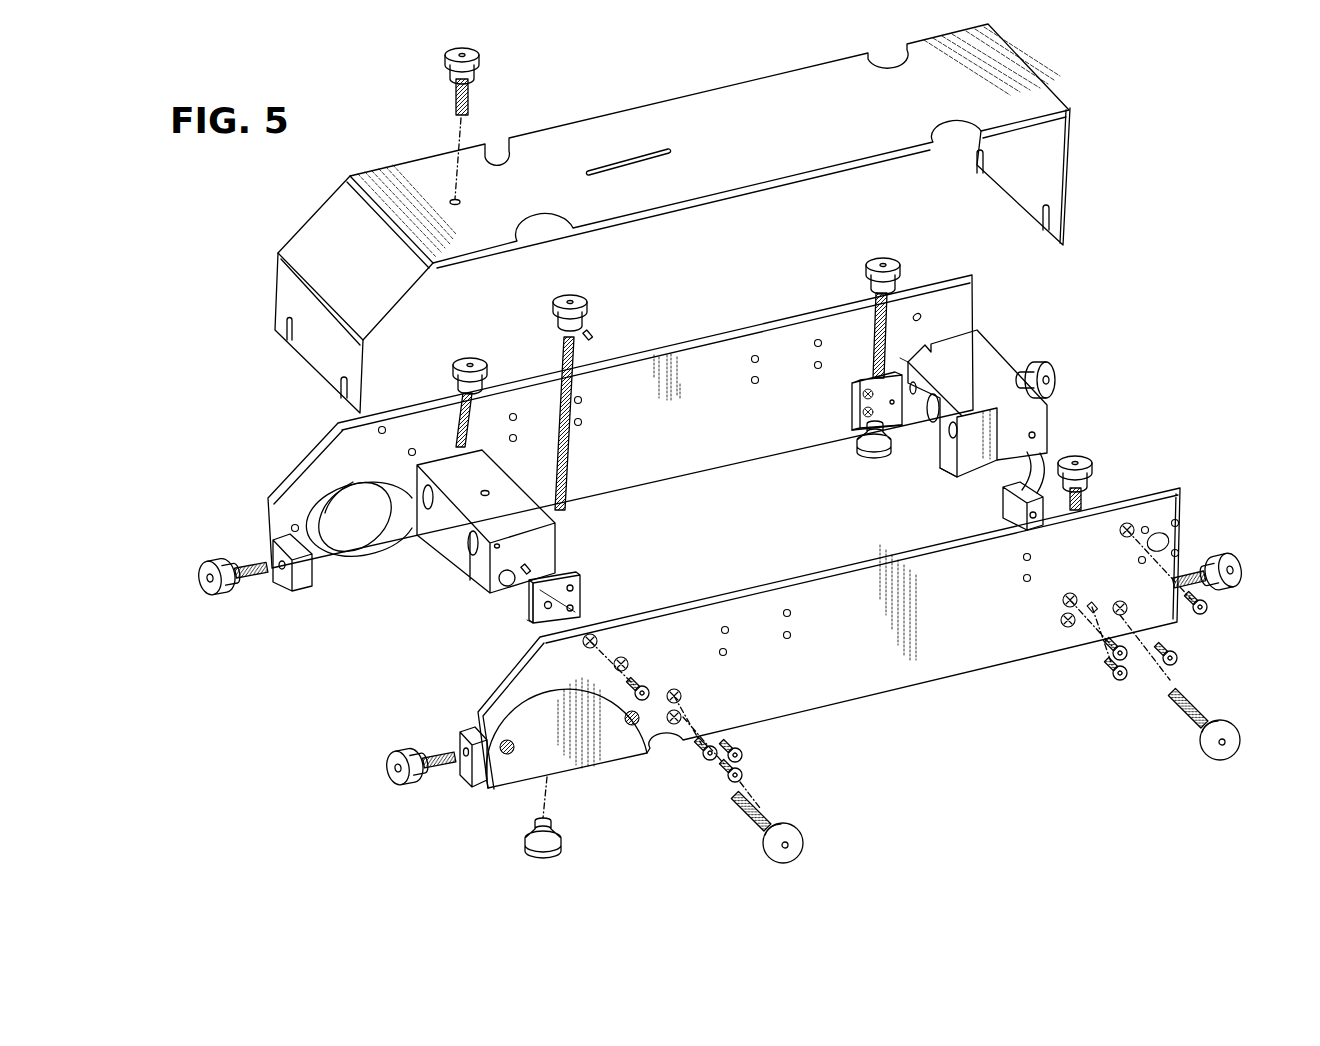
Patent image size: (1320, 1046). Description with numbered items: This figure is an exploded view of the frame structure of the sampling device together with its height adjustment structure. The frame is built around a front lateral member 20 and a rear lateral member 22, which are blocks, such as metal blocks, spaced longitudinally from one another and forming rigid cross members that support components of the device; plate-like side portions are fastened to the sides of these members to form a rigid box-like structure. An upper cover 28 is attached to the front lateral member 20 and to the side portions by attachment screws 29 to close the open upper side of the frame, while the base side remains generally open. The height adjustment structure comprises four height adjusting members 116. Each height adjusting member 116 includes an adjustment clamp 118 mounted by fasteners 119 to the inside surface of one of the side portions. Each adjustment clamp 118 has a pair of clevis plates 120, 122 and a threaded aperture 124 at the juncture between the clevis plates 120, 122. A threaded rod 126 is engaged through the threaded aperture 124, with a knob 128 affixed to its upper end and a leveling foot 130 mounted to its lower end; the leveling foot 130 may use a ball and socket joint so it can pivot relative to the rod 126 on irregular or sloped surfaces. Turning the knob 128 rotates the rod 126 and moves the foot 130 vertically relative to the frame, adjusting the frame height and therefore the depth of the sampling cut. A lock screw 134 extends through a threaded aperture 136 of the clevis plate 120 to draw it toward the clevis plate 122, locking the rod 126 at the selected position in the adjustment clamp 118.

The front lateral member 20 is at (458, 526).
The rear lateral member 22 is at (992, 360).
The upper cover 28 is at (662, 113).
The attachment screws 29 is at (452, 52).
The height adjusting members 116 is at (452, 420).
The adjustment clamp 118 is at (585, 598).
The fasteners 119 is at (745, 775).
The clevis plate 120 is at (528, 622).
The clevis plate 122 is at (528, 652).
The threaded aperture 124 is at (555, 575).
The threaded rod 126 is at (460, 447).
The knob 128 is at (574, 296).
The leveling foot 130 is at (868, 460).
The lock screw 134 is at (800, 830).
The threaded aperture 136 is at (895, 408).